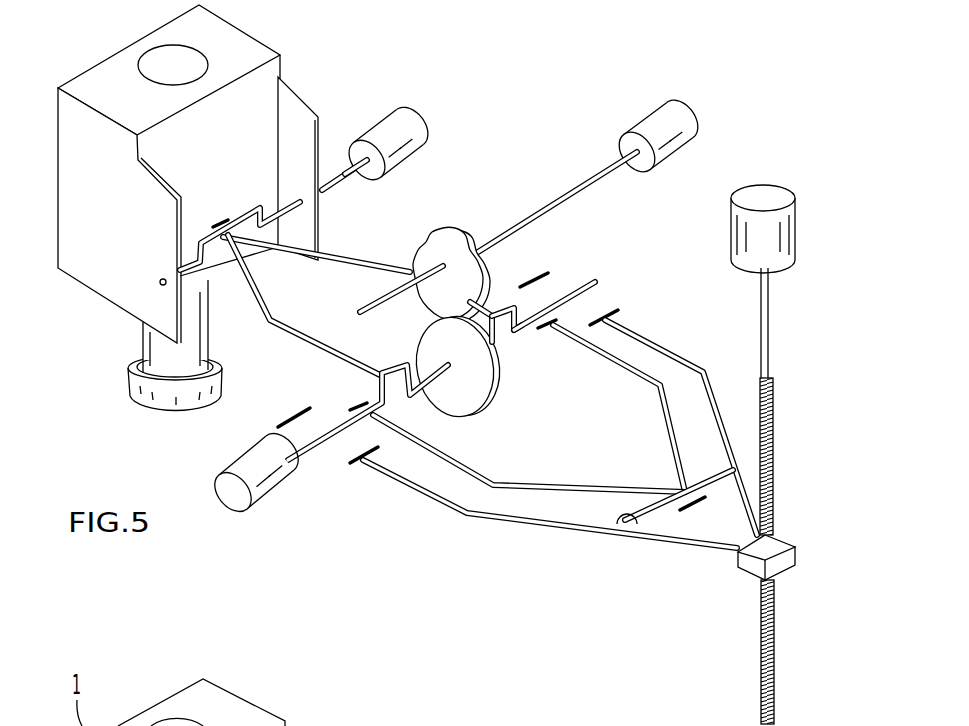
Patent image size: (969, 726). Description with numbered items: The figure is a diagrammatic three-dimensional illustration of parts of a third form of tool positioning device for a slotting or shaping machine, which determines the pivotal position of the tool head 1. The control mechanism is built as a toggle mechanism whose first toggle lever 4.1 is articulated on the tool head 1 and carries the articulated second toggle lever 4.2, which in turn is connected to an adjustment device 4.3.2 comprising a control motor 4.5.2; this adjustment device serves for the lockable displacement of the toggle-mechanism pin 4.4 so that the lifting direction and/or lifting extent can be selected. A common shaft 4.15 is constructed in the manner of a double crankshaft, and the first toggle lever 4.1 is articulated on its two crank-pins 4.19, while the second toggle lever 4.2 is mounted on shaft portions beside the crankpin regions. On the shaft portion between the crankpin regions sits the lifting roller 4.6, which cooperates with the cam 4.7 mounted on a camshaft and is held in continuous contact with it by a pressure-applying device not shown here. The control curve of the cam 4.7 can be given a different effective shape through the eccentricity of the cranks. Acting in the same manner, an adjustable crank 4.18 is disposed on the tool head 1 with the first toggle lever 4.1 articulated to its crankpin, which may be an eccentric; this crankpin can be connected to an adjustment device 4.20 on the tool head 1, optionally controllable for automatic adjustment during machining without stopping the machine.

The tool head 1 is at (80, 78).
The first toggle lever 4.1 is at (365, 258).
The second toggle lever 4.2 is at (618, 368).
The adjustment device 4.3.2 is at (687, 370).
The toggle-mechanism pin 4.4 is at (623, 528).
The control motor 4.5.2 is at (762, 193).
The lifting roller 4.6 is at (477, 382).
The cam 4.7 is at (448, 242).
The common shaft 4.15 is at (582, 280).
The adjustable crank 4.18 is at (247, 214).
The crank-pins 4.19 is at (508, 307).
The adjustment device 4.20 is at (410, 130).